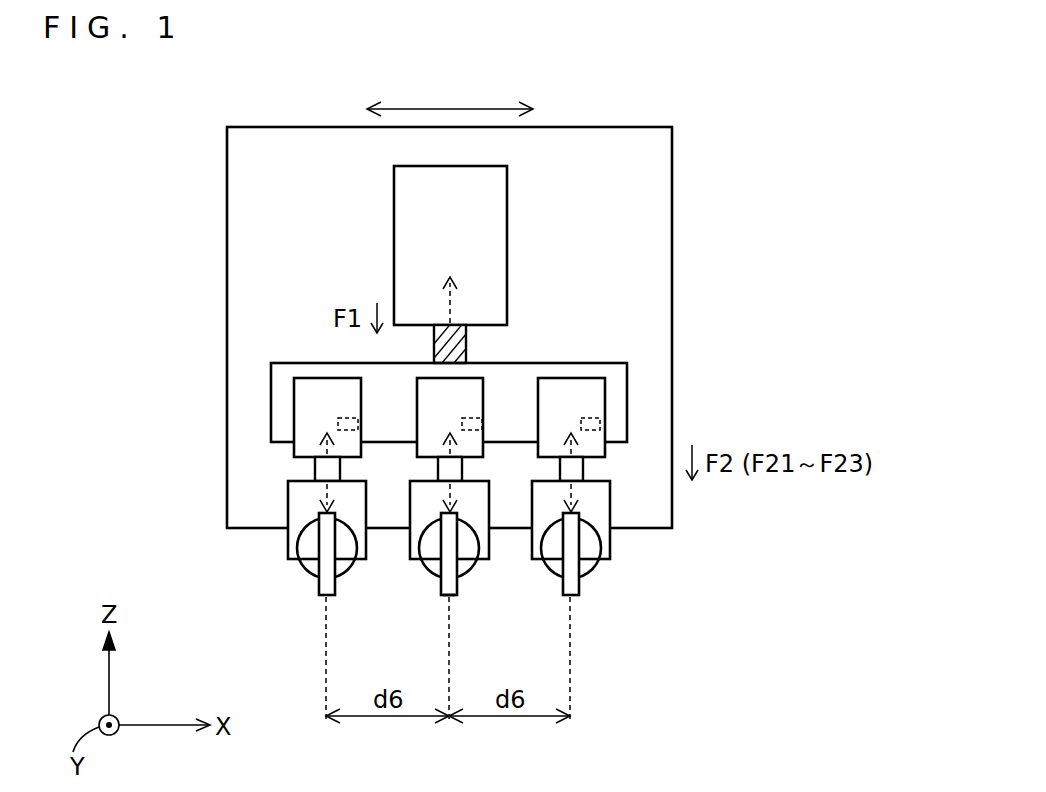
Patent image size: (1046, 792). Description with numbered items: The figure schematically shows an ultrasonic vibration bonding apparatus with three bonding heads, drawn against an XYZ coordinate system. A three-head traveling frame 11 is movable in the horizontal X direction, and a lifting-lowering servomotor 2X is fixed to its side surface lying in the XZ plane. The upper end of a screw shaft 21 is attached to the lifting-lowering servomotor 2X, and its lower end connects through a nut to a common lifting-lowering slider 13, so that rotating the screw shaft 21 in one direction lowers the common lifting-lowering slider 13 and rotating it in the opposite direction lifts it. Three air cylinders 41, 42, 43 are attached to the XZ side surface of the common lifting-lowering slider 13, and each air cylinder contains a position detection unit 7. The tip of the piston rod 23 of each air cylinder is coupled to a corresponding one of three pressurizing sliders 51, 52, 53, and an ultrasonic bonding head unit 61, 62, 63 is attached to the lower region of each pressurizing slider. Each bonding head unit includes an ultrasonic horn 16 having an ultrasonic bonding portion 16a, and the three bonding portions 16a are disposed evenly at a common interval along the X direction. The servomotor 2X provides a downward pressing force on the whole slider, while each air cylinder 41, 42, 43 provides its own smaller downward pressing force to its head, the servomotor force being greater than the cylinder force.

The three-head traveling frame 11 is at (581, 127).
The lifting-lowering servomotor 2X is at (507, 247).
The screw shaft 21 is at (466, 354).
The common lifting-lowering slider 13 is at (585, 363).
The air cylinder 41 is at (361, 446).
The air cylinder 42 is at (483, 446).
The air cylinder 43 is at (605, 446).
The position detection unit 7 is at (364, 422).
The piston rod 23 is at (340, 470).
The pressurizing slider 51 is at (366, 543).
The pressurizing slider 52 is at (489, 543).
The pressurizing slider 53 is at (610, 543).
The ultrasonic bonding head unit 61 is at (305, 573).
The ultrasonic bonding head unit 62 is at (428, 573).
The ultrasonic bonding head unit 63 is at (553, 573).
The ultrasonic horn 16 is at (471, 568).
The ultrasonic bonding portion 16a is at (443, 597).